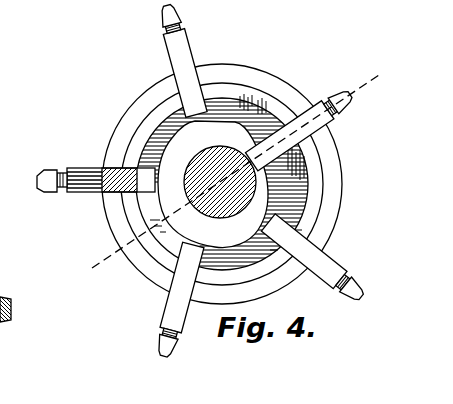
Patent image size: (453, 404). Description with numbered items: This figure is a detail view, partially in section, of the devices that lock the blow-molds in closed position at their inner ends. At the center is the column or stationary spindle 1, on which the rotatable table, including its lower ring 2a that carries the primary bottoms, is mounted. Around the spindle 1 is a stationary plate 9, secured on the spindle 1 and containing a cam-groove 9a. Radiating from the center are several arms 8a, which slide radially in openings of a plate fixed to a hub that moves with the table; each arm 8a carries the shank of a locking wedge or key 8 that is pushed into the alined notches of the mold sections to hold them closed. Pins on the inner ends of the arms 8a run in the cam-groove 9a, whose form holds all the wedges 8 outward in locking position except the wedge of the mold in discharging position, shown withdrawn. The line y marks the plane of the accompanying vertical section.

The column or stationary spindle 1 is at (214, 150).
The locking wedges or keys 8 is at (44, 173).
The arms 8a is at (182, 52).
The stationary plate 9 is at (309, 184).
The cam-groove 9a is at (167, 240).
The plane yy y is at (233, 179).
The lower part or ring 2a is at (100, 8).